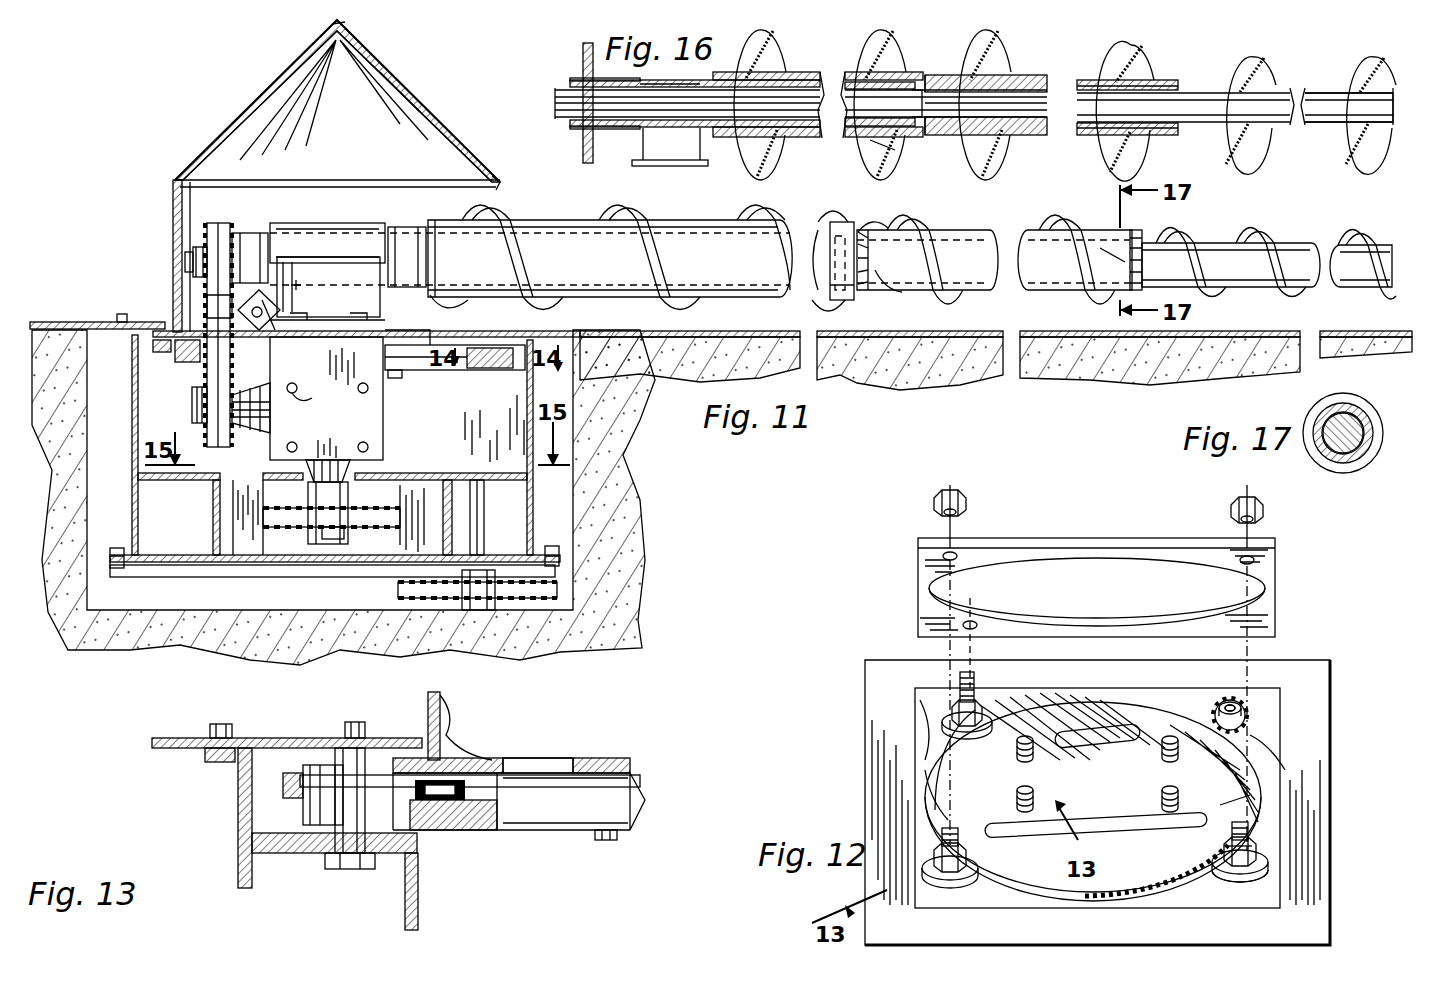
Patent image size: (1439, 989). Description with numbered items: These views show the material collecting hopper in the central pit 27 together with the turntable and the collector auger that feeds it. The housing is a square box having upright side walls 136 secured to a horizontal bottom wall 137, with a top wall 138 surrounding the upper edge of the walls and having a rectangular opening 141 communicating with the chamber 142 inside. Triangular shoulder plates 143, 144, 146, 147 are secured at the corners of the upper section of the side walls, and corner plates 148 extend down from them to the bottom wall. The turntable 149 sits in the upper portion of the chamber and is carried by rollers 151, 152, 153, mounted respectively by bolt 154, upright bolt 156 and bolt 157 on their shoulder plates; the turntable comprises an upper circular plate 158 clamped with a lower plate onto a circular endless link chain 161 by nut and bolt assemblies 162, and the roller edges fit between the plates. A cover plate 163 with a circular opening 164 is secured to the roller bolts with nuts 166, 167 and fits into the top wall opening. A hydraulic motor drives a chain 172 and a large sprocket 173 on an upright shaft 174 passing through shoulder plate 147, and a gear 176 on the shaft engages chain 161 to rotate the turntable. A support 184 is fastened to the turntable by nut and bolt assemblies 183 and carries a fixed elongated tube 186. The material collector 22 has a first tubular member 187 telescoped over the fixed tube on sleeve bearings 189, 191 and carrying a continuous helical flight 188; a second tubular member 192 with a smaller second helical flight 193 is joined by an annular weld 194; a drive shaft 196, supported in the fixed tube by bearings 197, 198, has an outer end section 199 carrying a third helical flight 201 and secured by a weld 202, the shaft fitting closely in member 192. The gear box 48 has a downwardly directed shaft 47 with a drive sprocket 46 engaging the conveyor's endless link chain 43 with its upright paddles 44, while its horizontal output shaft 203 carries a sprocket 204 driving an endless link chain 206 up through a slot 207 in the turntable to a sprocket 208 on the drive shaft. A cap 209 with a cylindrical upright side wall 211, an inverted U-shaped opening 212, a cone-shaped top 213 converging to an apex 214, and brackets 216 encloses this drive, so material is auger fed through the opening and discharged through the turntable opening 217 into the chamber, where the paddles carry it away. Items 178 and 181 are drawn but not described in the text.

In FIG. 11, the material collector 22 is at (950, 226).
In FIG. 16, the material collector 22 is at (1010, 70).
In FIG. 11, the central pit 27 is at (570, 435).
In FIG. 11, the endless link chain 43 is at (398, 508).
In FIG. 11, the upright paddles 44 is at (242, 548).
In FIG. 11, the drive sprocket 46 is at (298, 527).
In FIG. 11, the downwardly directed shaft 47 is at (336, 537).
In FIG. 11, the gear box 48 is at (348, 481).
In FIG. 11, the upright side walls 136 is at (132, 500).
In FIG. 13, the upright side walls 136 is at (238, 832).
In FIG. 11, the bottom wall 137 is at (150, 562).
In FIG. 11, the top wall 138 is at (105, 322).
In FIG. 12, the top wall 138 is at (1305, 746).
In FIG. 13, the top wall 138 is at (176, 750).
In FIG. 12, the rectangular opening 141 is at (1285, 726).
In FIG. 11, the chamber 142 is at (498, 406).
In FIG. 12, the chamber 142 is at (922, 772).
In FIG. 12, the shoulder plate 143 is at (1222, 888).
In FIG. 12, the shoulder plate 144 is at (990, 895).
In FIG. 13, the shoulder plate 144 is at (270, 850).
In FIG. 12, the shoulder plate 146 is at (930, 724).
In FIG. 12, the shoulder plate 147 is at (1262, 748).
In FIG. 13, the corner plates 148 is at (418, 888).
In FIG. 11, the turntable 149 is at (170, 373).
In FIG. 12, the turntable 149 is at (1222, 810).
In FIG. 13, the turntable 149 is at (592, 756).
In FIG. 12, the roller 151 is at (990, 725).
In FIG. 12, the roller 152 is at (940, 882).
In FIG. 13, the roller 152 is at (290, 785).
In FIG. 12, the roller 153 is at (1258, 876).
In FIG. 12, the bolt 154 is at (975, 700).
In FIG. 13, the upright bolt 156 is at (342, 870).
In FIG. 12, the bolt 157 is at (1252, 845).
In FIG. 13, the upper circular plate 158 is at (500, 760).
In FIG. 13, the circular endless link chain 161 is at (437, 810).
In FIG. 11, the nut and bolt assemblies 162 is at (395, 375).
In FIG. 13, the nut and bolt assemblies 162 is at (605, 842).
In FIG. 12, the cover plate 163 is at (1000, 545).
In FIG. 12, the circular opening 164 is at (1090, 560).
In FIG. 13, the circular opening 164 is at (210, 735).
In FIG. 12, the nut 166 is at (962, 500).
In FIG. 13, the nut 166 is at (368, 728).
In FIG. 12, the nut 167 is at (1238, 508).
In FIG. 11, the chain 172 is at (553, 584).
In FIG. 11, the large sprocket 173 is at (440, 600).
In FIG. 12, the upright shaft 174 is at (1238, 706).
In FIG. 11, the gear 176 is at (470, 368).
In FIG. 12, the gear 176 is at (1214, 710).
In FIG. 11, the motor housing 178 is at (372, 408).
In FIG. 11, the mounting bolt 181 is at (297, 394).
In FIG. 11, the nut and bolt assemblies 183 is at (300, 312).
In FIG. 11, the support 184 is at (358, 225).
In FIG. 16, the support 184 is at (680, 157).
In FIG. 16, the fixed elongated tube 186 is at (650, 86).
In FIG. 11, the first tubular member 187 is at (640, 222).
In FIG. 16, the first tubular member 187 is at (800, 74).
In FIG. 11, the continuous helical flight 188 is at (820, 226).
In FIG. 16, the continuous helical flight 188 is at (905, 72).
In FIG. 16, the sleeve bearing 189 is at (768, 34).
In FIG. 16, the sleeve bearing 191 is at (888, 152).
In FIG. 11, the second tubular member 192 is at (1108, 252).
In FIG. 16, the second tubular member 192 is at (1100, 80).
In FIG. 17, the second tubular member 192 is at (1368, 452).
In FIG. 11, the second continuous helical flight 193 is at (1060, 208).
In FIG. 16, the second continuous helical flight 193 is at (1122, 140).
In FIG. 17, the second continuous helical flight 193 is at (1375, 430).
In FIG. 11, the annular weld 194 is at (905, 226).
In FIG. 16, the annular weld 194 is at (938, 74).
In FIG. 11, the drive shaft 196 is at (195, 262).
In FIG. 16, the drive shaft 196 is at (640, 98).
In FIG. 17, the drive shaft 196 is at (1350, 425).
In FIG. 16, the bearing 197 is at (604, 80).
In FIG. 16, the bearing 198 is at (950, 140).
In FIG. 11, the outer end section 199 is at (1280, 252).
In FIG. 11, the third continuous helical flight 201 is at (1352, 238).
In FIG. 16, the third continuous helical flight 201 is at (1240, 152).
In FIG. 11, the weld 202 is at (1140, 240).
In FIG. 11, the horizontal output shaft 203 is at (192, 405).
In FIG. 11, the sprocket 204 is at (240, 380).
In FIG. 11, the endless link chain 206 is at (212, 307).
In FIG. 16, the endless link chain 206 is at (583, 158).
In FIG. 12, the slot 207 is at (1085, 745).
In FIG. 11, the sprocket 208 is at (200, 243).
In FIG. 16, the sprocket 208 is at (588, 80).
In FIG. 11, the cap 209 is at (257, 95).
In FIG. 11, the cylindrical upright side wall 211 is at (172, 184).
In FIG. 11, the opening 212 is at (500, 184).
In FIG. 11, the cone-shaped top 213 is at (407, 84).
In FIG. 11, the apex 214 is at (350, 23).
In FIG. 11, the brackets 216 is at (264, 232).
In FIG. 11, the turntable opening 217 is at (468, 335).
In FIG. 12, the turntable opening 217 is at (1135, 840).
In FIG. 13, the turntable opening 217 is at (550, 762).